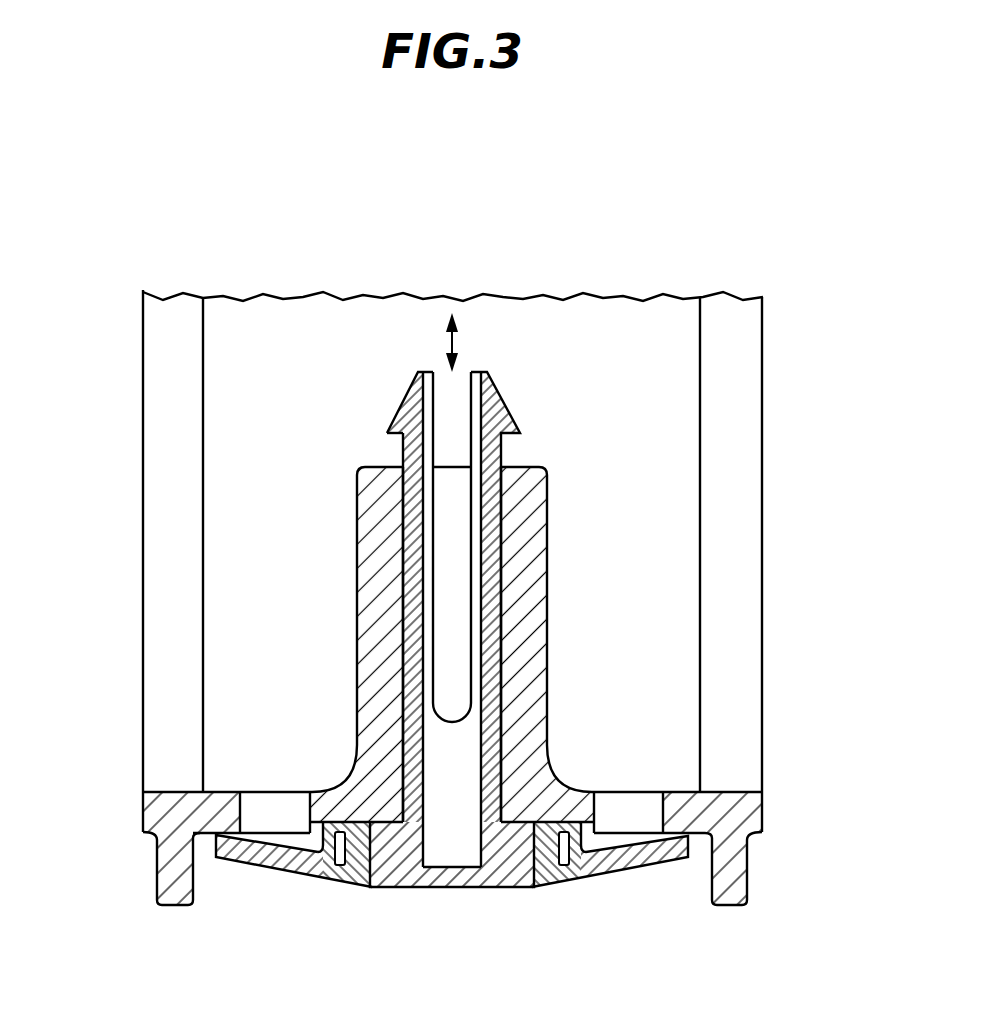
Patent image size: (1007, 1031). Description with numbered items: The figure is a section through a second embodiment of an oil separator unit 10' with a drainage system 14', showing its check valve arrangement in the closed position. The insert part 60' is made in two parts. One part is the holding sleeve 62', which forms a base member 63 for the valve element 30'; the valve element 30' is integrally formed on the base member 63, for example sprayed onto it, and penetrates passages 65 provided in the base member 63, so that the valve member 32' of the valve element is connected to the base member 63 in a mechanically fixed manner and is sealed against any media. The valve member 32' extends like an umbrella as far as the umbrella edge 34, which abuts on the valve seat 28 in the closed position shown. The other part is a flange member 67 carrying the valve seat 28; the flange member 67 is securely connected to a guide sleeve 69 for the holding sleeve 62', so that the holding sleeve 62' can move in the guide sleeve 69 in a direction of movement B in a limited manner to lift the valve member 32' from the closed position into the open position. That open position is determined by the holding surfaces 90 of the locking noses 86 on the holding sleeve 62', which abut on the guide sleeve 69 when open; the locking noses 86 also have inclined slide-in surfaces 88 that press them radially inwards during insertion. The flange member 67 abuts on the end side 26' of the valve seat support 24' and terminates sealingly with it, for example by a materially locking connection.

The oil separator unit 10' is at (453, 510).
The drainage system 14' is at (773, 564).
The valve seat support 24' is at (792, 564).
The end side of the valve seat support 26' is at (186, 844).
The flange member 67 is at (200, 810).
The umbrella edge 34 is at (717, 872).
The valve seat 28 is at (696, 836).
The insert part 60' is at (435, 644).
The guide sleeve 69 is at (382, 654).
The holding sleeve 62' is at (554, 644).
The inclined slide-in surfaces 88 is at (369, 616).
The locking noses 86 is at (488, 408).
The holding surfaces 90 is at (392, 447).
The base member 63 is at (518, 866).
The passages 65 is at (362, 870).
The valve member 32' is at (294, 903).
The valve element 30' is at (610, 896).
The direction of movement B is at (456, 344).